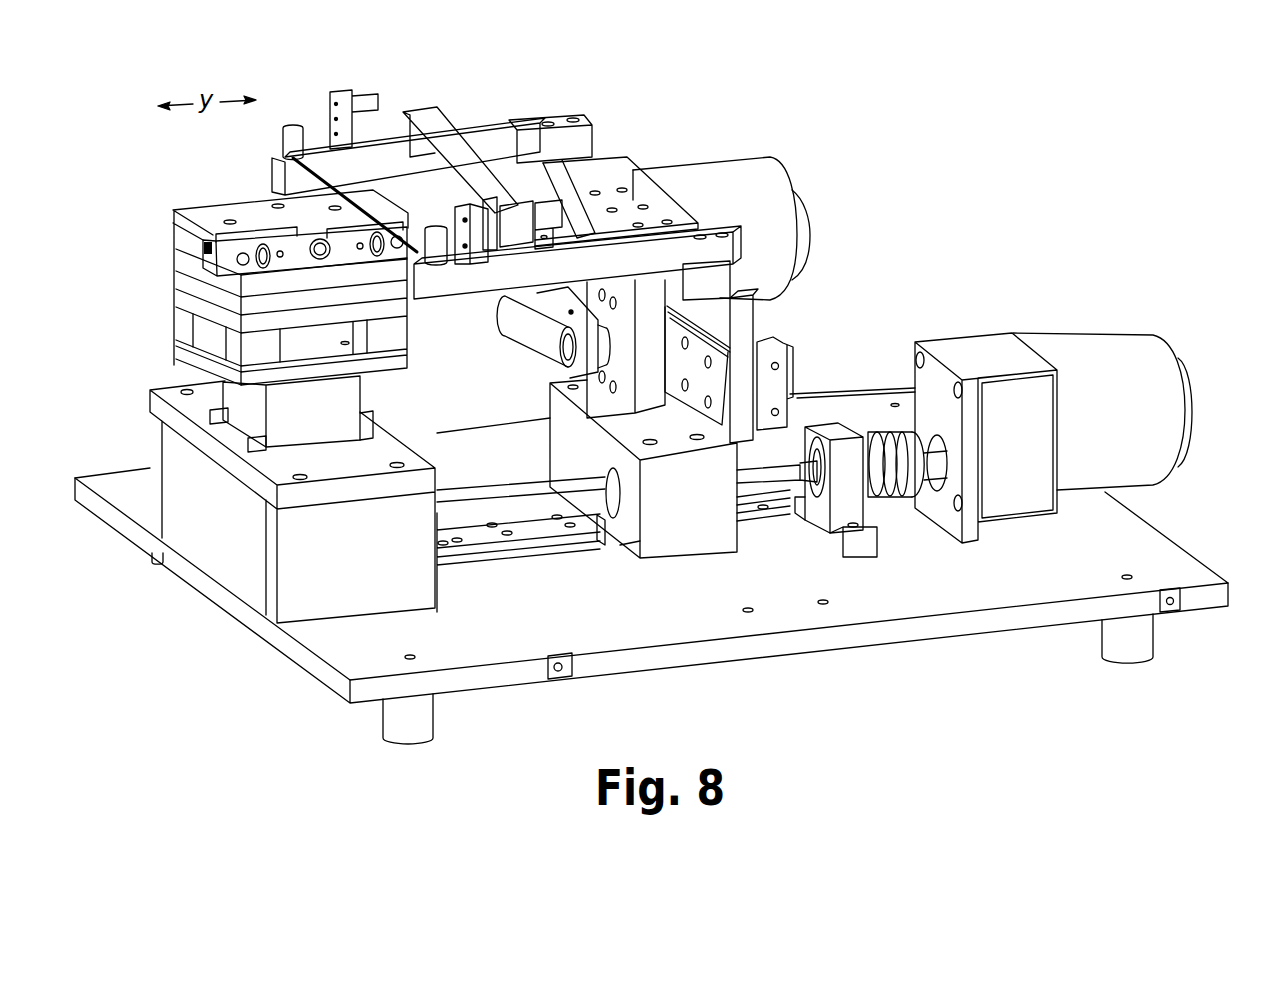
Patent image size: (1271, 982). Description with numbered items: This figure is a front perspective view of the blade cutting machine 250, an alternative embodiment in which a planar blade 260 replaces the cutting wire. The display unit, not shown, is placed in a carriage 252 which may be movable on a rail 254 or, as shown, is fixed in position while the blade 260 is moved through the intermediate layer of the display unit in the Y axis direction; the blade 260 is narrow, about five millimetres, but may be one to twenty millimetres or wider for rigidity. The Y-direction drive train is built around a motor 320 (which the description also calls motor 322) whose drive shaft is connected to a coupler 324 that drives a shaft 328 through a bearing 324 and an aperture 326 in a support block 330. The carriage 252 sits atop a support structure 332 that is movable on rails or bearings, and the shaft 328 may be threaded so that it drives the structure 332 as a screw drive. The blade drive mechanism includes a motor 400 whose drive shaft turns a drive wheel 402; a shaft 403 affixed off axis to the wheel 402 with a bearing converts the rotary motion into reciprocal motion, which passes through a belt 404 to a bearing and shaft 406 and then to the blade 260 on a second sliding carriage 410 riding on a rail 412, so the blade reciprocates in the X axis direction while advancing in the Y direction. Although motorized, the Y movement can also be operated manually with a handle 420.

The blade cutting machine 250 is at (862, 112).
The carriage 252 is at (243, 214).
The rail 254 is at (537, 553).
The blade 260 is at (325, 180).
The motor 320 is at (1097, 360).
The motor 322 is at (893, 433).
The coupler 324 is at (820, 523).
The aperture 326 is at (603, 543).
The shaft 328 is at (520, 503).
The support block 330 is at (643, 469).
The support structure 332 is at (300, 570).
The motor 400 is at (746, 198).
The drive wheel 402 is at (527, 245).
The shaft 403 is at (530, 305).
The belt 404 is at (530, 338).
The bearing and shaft 406 is at (557, 352).
The second sliding carriage 410 is at (645, 365).
The rail 412 is at (702, 375).
The handle 420 is at (457, 130).